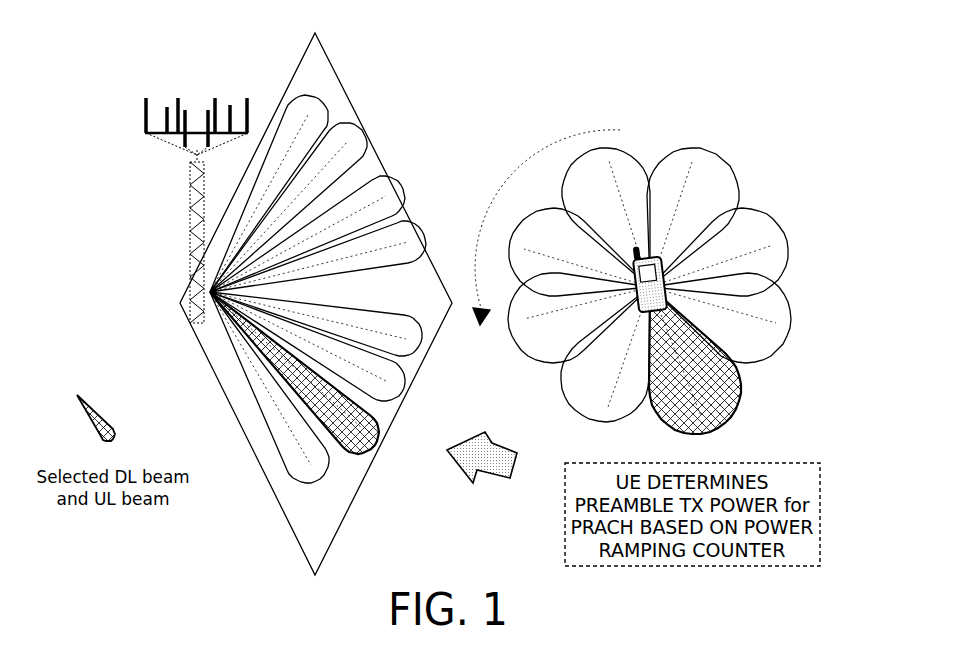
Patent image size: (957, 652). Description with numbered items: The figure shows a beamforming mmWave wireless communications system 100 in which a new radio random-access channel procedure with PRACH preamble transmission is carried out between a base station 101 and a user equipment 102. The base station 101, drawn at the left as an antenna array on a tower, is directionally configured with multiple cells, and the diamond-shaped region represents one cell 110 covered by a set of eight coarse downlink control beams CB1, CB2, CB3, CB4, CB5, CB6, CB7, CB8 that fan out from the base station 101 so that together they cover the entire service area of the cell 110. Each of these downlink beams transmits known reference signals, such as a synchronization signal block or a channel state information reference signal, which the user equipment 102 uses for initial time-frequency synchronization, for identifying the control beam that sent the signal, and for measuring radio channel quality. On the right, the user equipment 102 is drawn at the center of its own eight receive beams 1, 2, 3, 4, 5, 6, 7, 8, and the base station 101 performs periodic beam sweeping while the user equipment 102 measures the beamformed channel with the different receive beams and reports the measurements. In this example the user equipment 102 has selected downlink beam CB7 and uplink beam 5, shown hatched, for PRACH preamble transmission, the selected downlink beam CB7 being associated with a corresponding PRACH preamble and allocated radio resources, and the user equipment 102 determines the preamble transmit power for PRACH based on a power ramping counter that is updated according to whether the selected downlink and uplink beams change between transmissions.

The beamforming wireless communications system 100 is at (858, 64).
The base station 101 is at (198, 101).
The user equipment 102 is at (658, 256).
The cell 110 is at (306, 522).
The downlink control beam CB1 is at (269, 193).
The downlink control beam CB2 is at (288, 207).
The downlink control beam CB3 is at (307, 234).
The downlink control beam CB4 is at (318, 256).
The downlink control beam CB5 is at (316, 324).
The downlink control beam CB6 is at (307, 346).
The downlink control beam CB7 is at (294, 373).
The downlink control beam CB8 is at (269, 387).
The UE RX beam 1 is at (606, 217).
The UE RX beam 2 is at (579, 252).
The UE RX beam 3 is at (579, 318).
The UE RX beam 4 is at (605, 354).
The UE beam 5 is at (695, 360).
The UE RX beam 6 is at (720, 318).
The UE RX beam 7 is at (719, 252).
The UE RX beam 8 is at (693, 217).